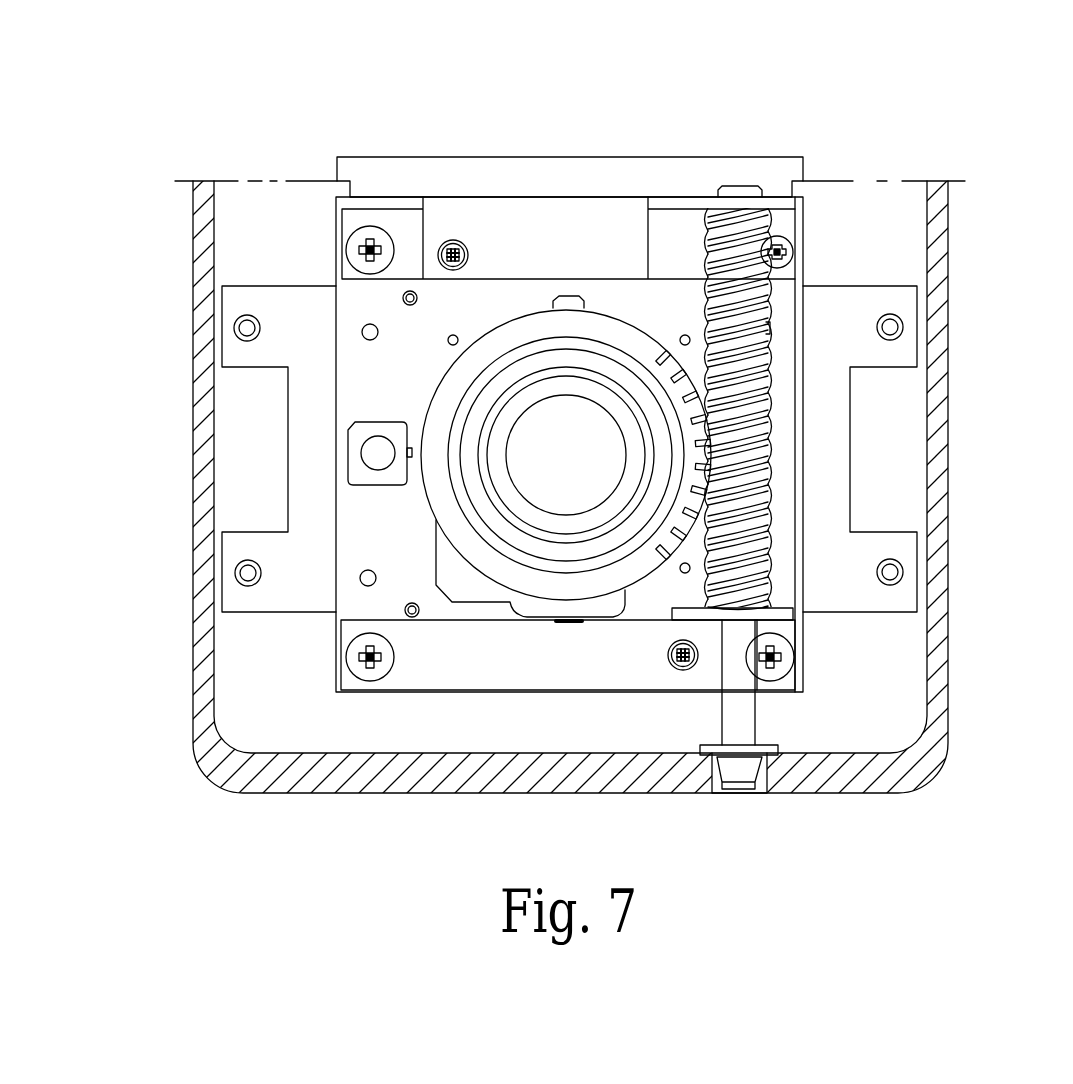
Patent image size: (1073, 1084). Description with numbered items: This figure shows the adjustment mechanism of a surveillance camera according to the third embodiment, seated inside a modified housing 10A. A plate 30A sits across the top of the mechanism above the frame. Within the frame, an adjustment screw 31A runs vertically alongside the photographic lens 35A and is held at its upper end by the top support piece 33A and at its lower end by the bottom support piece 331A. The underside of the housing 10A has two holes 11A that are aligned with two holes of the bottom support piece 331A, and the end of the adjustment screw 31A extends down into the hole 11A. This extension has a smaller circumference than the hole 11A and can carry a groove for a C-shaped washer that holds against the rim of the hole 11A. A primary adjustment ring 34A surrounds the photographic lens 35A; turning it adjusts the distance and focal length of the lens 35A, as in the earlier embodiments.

The housing 10A is at (937, 485).
The hole 11A is at (755, 790).
The cover plate 30A is at (638, 170).
The adjustment screw 31A is at (770, 328).
The top support piece 33A is at (783, 203).
The bottom support piece 331A is at (783, 613).
The primary adjustment ring 34A is at (458, 373).
The photographic lens 35A is at (503, 525).